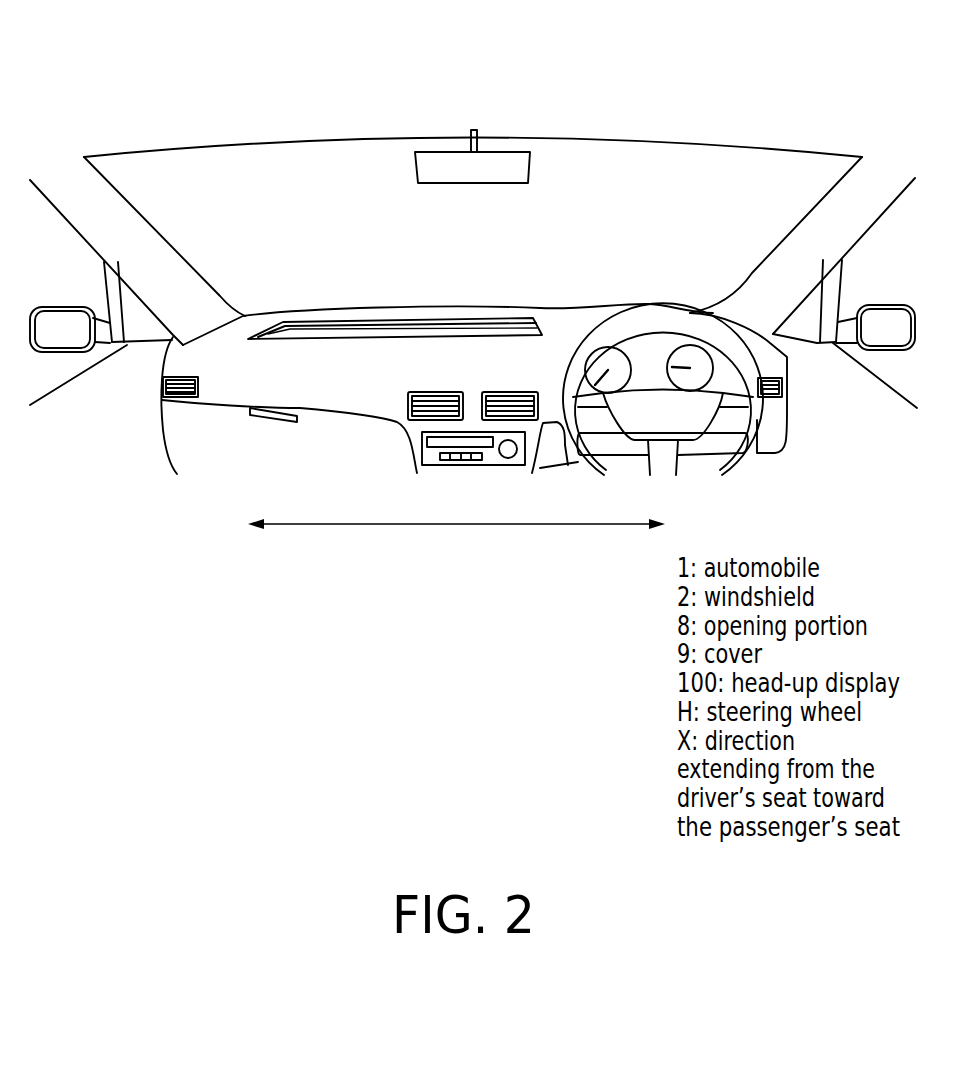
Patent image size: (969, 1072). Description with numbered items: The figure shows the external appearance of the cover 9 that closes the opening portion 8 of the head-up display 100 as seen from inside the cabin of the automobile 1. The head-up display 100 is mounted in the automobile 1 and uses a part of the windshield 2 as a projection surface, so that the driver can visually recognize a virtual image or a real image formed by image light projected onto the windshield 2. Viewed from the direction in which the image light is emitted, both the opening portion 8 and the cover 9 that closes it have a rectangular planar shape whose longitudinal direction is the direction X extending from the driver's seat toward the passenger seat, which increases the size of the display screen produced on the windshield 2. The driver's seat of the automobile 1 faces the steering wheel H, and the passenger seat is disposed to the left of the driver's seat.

The automobile 1 is at (215, 92).
The windshield 2 is at (655, 155).
The opening portion 8 is at (268, 322).
The cover 9 is at (495, 325).
The head-up display 100 is at (522, 295).
The steering wheel H is at (704, 317).
The direction X is at (456, 539).